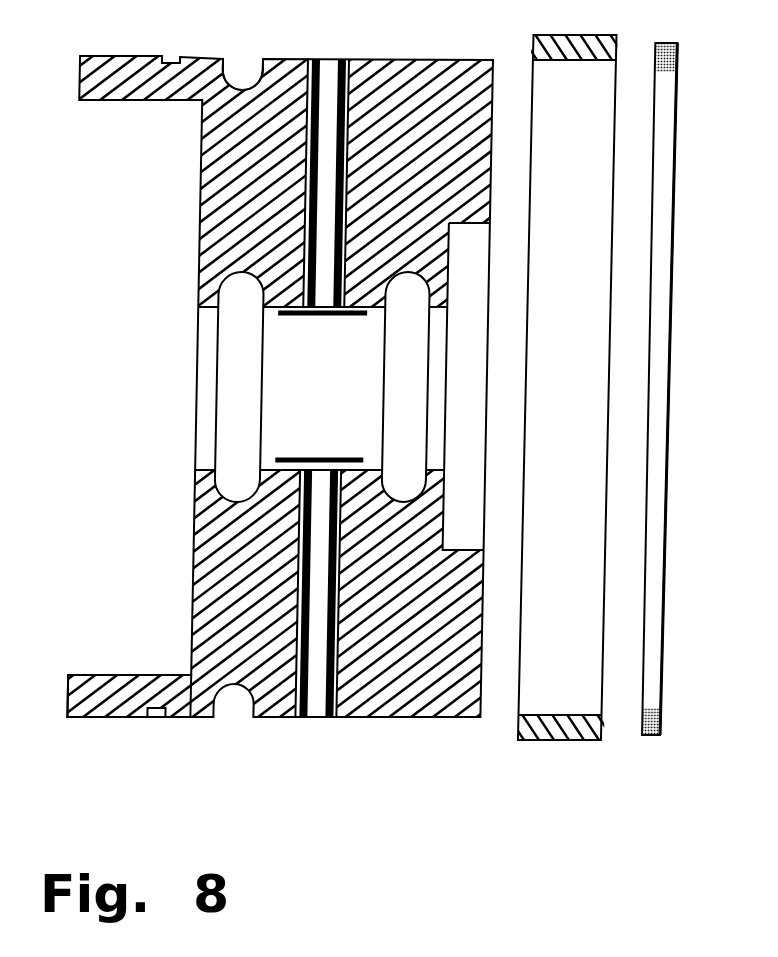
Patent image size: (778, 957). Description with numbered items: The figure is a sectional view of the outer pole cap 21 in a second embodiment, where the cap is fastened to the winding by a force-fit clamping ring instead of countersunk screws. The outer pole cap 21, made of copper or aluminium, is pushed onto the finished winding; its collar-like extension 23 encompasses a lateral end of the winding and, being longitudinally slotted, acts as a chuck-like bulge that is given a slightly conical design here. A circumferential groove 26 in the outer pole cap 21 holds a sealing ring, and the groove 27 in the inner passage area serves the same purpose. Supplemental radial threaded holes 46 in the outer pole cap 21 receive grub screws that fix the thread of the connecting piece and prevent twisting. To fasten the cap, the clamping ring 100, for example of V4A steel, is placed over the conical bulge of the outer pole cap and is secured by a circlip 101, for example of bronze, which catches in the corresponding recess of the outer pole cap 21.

The outer pole cap 21 is at (480, 667).
The collar-like extension 23 is at (66, 699).
The circumferential groove 26 is at (263, 81).
The groove 27 is at (246, 273).
The radial threaded holes 46 is at (336, 60).
The clamping ring 100 is at (583, 741).
The circlip 101 is at (660, 718).